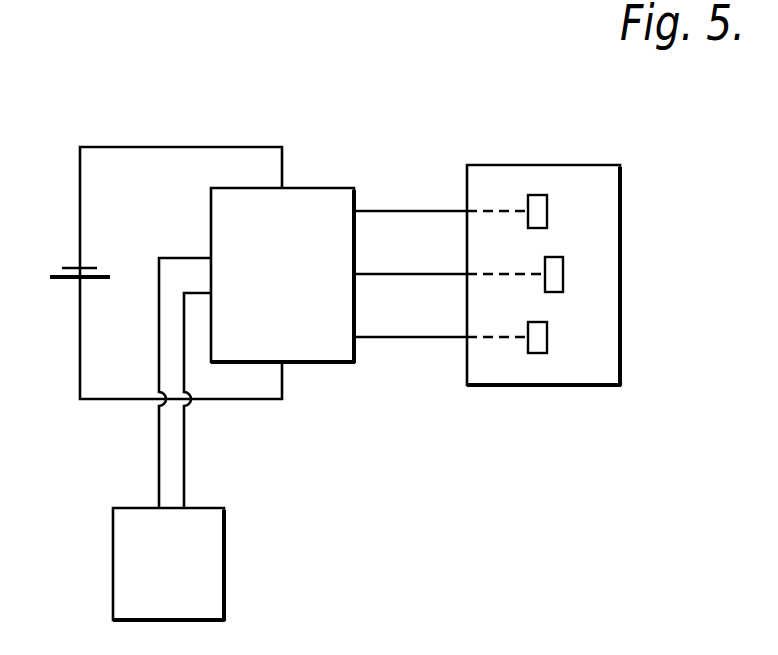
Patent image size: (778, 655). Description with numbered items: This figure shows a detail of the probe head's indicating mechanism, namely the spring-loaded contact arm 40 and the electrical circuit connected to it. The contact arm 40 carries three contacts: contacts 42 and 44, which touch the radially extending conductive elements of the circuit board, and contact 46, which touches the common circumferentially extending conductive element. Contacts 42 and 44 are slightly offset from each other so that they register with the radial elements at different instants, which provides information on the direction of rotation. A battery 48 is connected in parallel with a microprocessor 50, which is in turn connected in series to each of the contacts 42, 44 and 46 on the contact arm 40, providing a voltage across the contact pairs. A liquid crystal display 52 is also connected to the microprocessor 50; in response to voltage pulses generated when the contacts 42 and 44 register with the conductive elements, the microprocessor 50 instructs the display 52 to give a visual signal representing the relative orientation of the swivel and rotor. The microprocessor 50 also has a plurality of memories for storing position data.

The contact arm 40 is at (605, 208).
The contact 42 is at (538, 195).
The contact 44 is at (563, 276).
The contact 46 is at (537, 353).
The battery 48 is at (60, 267).
The microprocessor 50 is at (327, 188).
The liquid crystal display 52 is at (224, 546).